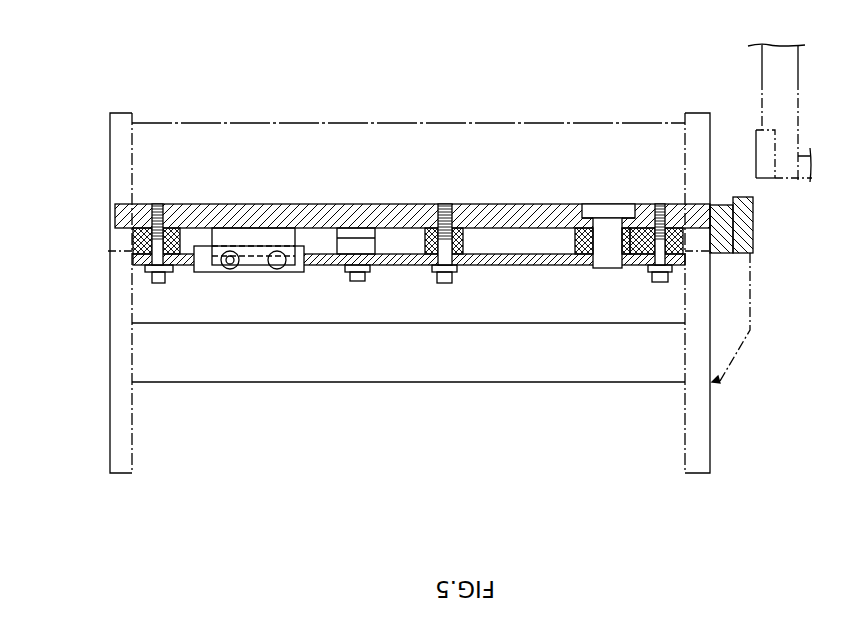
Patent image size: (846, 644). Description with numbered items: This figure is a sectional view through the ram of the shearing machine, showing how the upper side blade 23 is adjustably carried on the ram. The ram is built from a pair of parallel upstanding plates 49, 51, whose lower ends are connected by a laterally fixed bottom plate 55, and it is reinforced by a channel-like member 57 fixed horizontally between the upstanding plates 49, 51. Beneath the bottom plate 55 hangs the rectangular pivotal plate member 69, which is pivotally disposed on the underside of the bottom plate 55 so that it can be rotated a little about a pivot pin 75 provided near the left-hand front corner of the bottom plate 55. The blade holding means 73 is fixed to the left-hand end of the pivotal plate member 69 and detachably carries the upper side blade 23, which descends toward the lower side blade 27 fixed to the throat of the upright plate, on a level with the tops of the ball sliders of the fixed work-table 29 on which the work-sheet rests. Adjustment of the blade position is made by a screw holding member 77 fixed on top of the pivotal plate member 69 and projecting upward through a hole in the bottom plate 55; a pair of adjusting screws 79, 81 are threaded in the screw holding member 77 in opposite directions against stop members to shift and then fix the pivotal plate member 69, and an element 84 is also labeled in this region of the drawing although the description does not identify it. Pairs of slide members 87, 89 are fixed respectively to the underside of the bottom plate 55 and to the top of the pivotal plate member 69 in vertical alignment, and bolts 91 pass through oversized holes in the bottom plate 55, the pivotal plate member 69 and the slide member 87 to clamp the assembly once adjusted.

The upper side blade 23 is at (753, 230).
The lower side blade 27 is at (759, 180).
The fixed work-table 29 is at (798, 80).
The upstanding plate 49 is at (710, 437).
The upstanding plate 51 is at (133, 441).
The bottom plate 55 is at (546, 263).
The channel-like member 57 is at (466, 383).
The pivotal plate member 69 is at (337, 206).
The blade holding means 73 is at (751, 311).
The pivot pin 75 is at (607, 268).
The screw holding member 77 is at (253, 232).
The adjusting screw 79 is at (277, 269).
The adjusting screw 81 is at (232, 269).
The block 84 is at (225, 246).
The slide member 87 is at (133, 253).
The slide member 89 is at (140, 240).
The bolt 91 is at (158, 278).